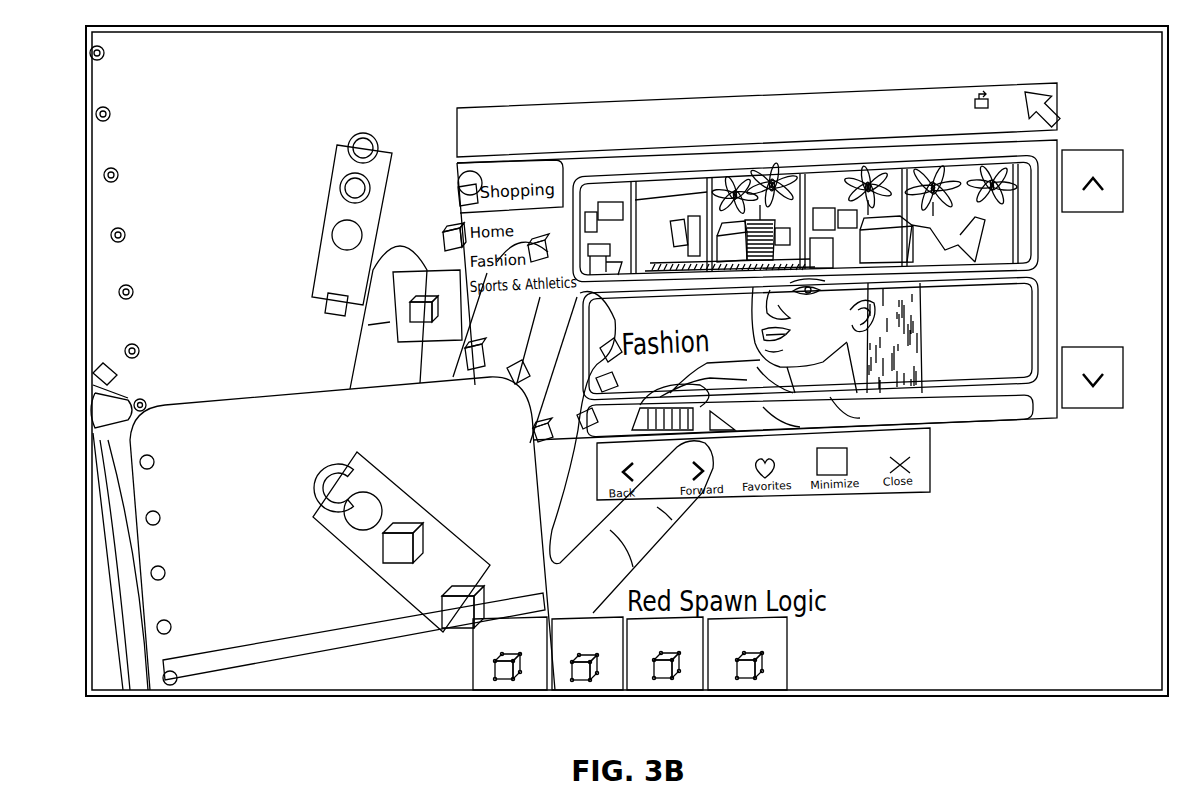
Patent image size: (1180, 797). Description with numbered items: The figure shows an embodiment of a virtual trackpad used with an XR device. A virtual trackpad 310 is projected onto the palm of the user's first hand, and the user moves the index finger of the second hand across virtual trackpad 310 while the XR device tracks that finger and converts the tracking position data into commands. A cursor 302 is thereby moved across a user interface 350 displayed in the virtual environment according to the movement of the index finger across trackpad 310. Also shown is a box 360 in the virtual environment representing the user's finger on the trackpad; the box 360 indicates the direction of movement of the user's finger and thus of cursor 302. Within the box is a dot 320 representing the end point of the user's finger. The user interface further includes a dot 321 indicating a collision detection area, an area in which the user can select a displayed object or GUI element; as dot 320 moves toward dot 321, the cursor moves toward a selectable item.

The cursor 302 is at (1062, 112).
The virtual trackpad 310 is at (217, 428).
The dot 320 is at (347, 523).
The dot 321 is at (328, 477).
The user interface 350 is at (747, 102).
The box 360 is at (375, 567).